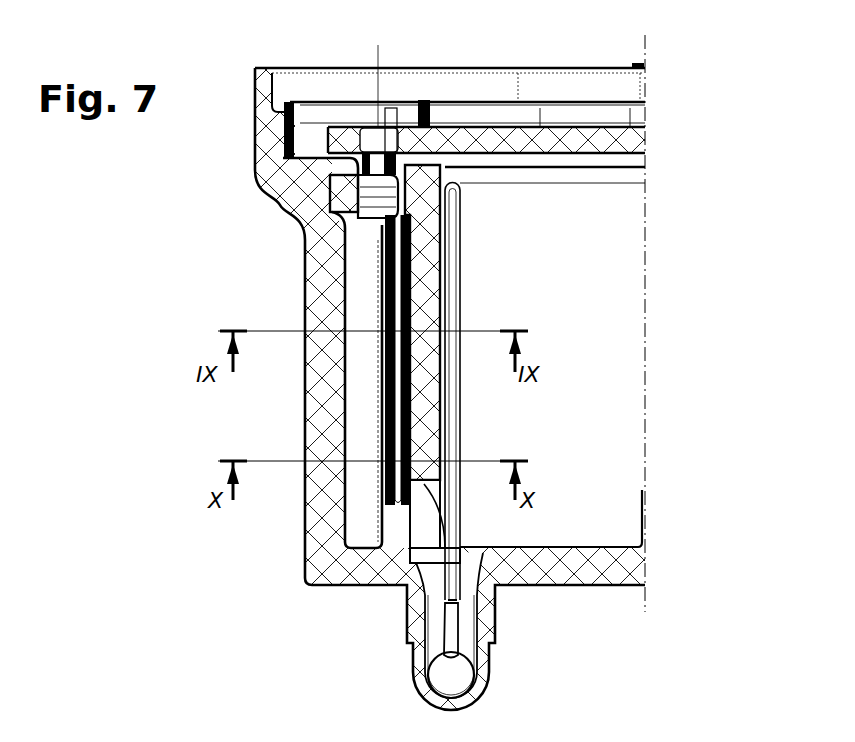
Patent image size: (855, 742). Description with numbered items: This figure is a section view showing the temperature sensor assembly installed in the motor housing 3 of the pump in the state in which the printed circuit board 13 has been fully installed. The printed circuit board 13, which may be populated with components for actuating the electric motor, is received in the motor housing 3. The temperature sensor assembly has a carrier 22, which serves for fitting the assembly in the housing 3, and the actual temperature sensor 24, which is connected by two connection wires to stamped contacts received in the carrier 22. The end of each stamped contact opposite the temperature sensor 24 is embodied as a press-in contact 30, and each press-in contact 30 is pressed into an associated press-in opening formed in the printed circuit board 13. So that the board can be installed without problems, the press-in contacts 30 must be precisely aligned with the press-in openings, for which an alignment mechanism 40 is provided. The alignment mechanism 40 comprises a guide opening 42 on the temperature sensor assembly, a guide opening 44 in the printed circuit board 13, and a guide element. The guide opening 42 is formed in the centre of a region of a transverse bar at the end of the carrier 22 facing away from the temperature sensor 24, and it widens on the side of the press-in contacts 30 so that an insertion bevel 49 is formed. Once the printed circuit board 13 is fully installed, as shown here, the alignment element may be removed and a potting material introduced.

The motor housing 3 is at (318, 282).
The printed circuit board 13 is at (582, 135).
The carrier 22 is at (432, 270).
The temperature sensor 24 is at (458, 678).
The press-in contact 30 is at (446, 128).
The alignment mechanism 40 is at (356, 52).
The guide opening 42 is at (365, 205).
The guide opening 44 is at (392, 135).
The insertion bevel 49 is at (372, 156).